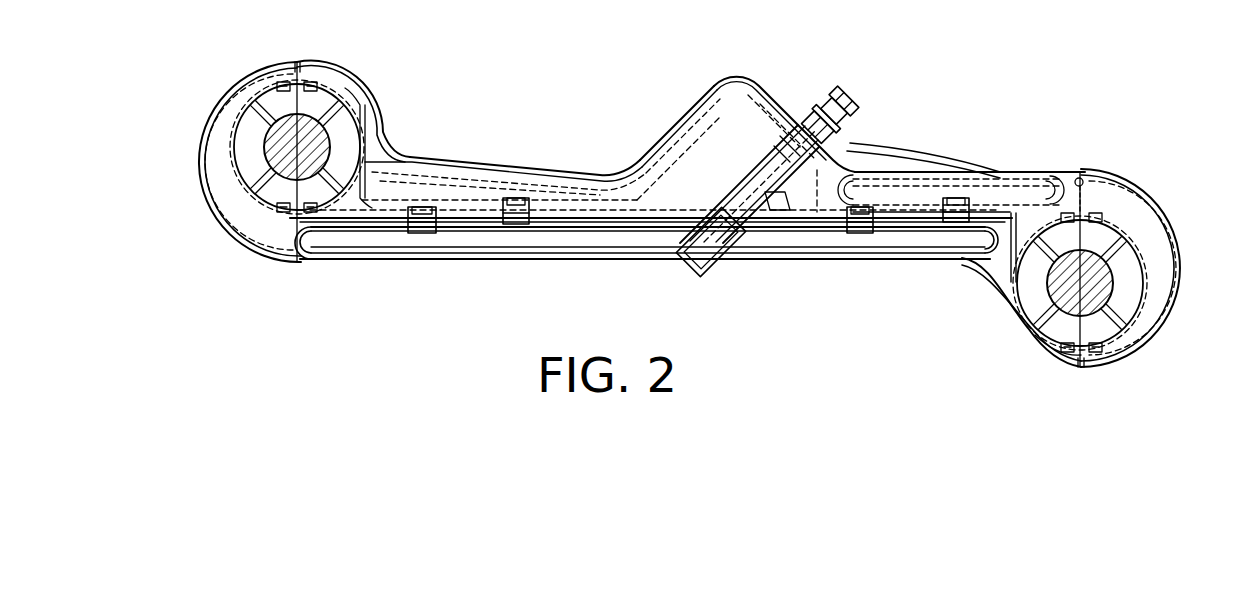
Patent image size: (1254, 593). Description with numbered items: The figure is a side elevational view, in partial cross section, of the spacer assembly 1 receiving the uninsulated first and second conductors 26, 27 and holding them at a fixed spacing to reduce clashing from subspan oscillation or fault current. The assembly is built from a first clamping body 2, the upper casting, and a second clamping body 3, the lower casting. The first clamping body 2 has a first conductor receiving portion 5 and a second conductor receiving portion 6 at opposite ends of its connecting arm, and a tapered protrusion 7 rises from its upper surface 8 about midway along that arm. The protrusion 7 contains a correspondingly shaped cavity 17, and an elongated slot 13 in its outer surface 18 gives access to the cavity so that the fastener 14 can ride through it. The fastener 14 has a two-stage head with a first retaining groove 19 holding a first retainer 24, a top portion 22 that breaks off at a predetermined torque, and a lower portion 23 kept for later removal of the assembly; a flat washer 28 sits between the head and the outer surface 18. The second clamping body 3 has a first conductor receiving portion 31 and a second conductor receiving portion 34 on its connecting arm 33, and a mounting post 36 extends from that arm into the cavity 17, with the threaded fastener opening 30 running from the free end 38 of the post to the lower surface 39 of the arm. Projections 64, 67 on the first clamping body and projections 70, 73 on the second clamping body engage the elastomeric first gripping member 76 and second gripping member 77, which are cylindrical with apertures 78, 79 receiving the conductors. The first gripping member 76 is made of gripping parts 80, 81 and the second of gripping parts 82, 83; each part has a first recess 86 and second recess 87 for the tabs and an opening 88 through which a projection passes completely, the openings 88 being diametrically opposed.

The spacer assembly 1 is at (605, 120).
The first clamping body 2 is at (1016, 164).
The second clamping body 3 is at (480, 268).
The first conductor receiving portion 5 is at (1178, 241).
The second conductor receiving portion 6 is at (363, 83).
The tapered protrusion 7 is at (763, 80).
The upper surface 8 is at (513, 163).
The elongated slot 13 is at (777, 93).
The fastener 14 is at (873, 157).
The cavity 17 is at (727, 117).
The outer surface 18 is at (785, 105).
The first retaining groove 19 is at (837, 107).
The top portion 22 is at (853, 117).
The lower portion 23 is at (890, 165).
The first retainer 24 is at (797, 110).
The first conductor 26 is at (347, 90).
The second conductor 27 is at (1117, 232).
The flat washer 28 is at (953, 167).
The fastener opening 30 is at (730, 193).
The first conductor receiving portion 31 is at (993, 307).
The connecting arm 33 is at (583, 260).
The second conductor receiving portion 34 is at (210, 117).
The mounting post 36 is at (747, 176).
The free end 38 is at (777, 140).
The lower surface 39 is at (655, 262).
The projection 64 is at (1133, 290).
The projection 67 is at (350, 145).
The projection 70 is at (1027, 278).
The projection 73 is at (247, 163).
The first gripping member 76 is at (1133, 339).
The second gripping member 77 is at (257, 214).
The aperture 78 is at (1043, 352).
The aperture 79 is at (273, 108).
The first gripping part 80 is at (1108, 220).
The second gripping part 81 is at (1017, 340).
The gripping part 82 is at (267, 207).
The gripping part 83 is at (330, 78).
The first recess 86 is at (1080, 178).
The second recess 87 is at (1063, 340).
The opening 88 is at (1112, 322).